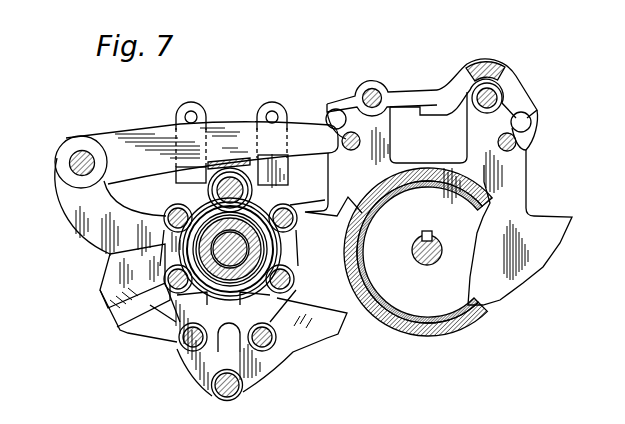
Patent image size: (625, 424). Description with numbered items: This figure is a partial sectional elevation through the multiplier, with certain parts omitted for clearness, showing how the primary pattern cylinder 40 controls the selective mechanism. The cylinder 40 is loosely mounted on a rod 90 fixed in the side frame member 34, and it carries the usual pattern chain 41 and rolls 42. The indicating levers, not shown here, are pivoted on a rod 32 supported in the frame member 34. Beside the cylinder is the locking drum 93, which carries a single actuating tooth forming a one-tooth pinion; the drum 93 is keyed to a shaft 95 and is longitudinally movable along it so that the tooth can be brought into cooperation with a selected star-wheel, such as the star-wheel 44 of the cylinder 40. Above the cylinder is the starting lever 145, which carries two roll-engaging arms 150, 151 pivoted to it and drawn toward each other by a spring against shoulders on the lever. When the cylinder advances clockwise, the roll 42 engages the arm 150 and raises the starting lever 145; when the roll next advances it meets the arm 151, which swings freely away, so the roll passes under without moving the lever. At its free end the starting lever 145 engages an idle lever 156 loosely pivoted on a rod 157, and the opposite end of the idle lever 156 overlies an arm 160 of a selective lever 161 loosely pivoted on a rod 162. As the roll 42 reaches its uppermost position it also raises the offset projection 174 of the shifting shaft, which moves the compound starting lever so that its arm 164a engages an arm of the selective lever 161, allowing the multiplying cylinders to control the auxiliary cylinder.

The rod 32 is at (69, 163).
The side frame member 34 is at (74, 224).
The primary pattern cylinder 40 is at (166, 252).
The pattern chain 41 is at (176, 352).
The roll 42 is at (206, 189).
The star-wheel 44 is at (126, 333).
The rod 90 is at (238, 241).
The locking drum 93 is at (390, 323).
The shaft 95 is at (421, 259).
The starting lever 145 is at (132, 132).
The roll-engaging arm 150 is at (177, 180).
The roll-engaging arm 151 is at (284, 165).
The idle lever 156 is at (335, 107).
The rod 157 is at (378, 90).
The arm 160 is at (458, 80).
The selective lever 161 is at (477, 66).
The rod 162 is at (495, 99).
The arm of compound starting lever 164a is at (531, 126).
The offset projection 174 is at (228, 158).